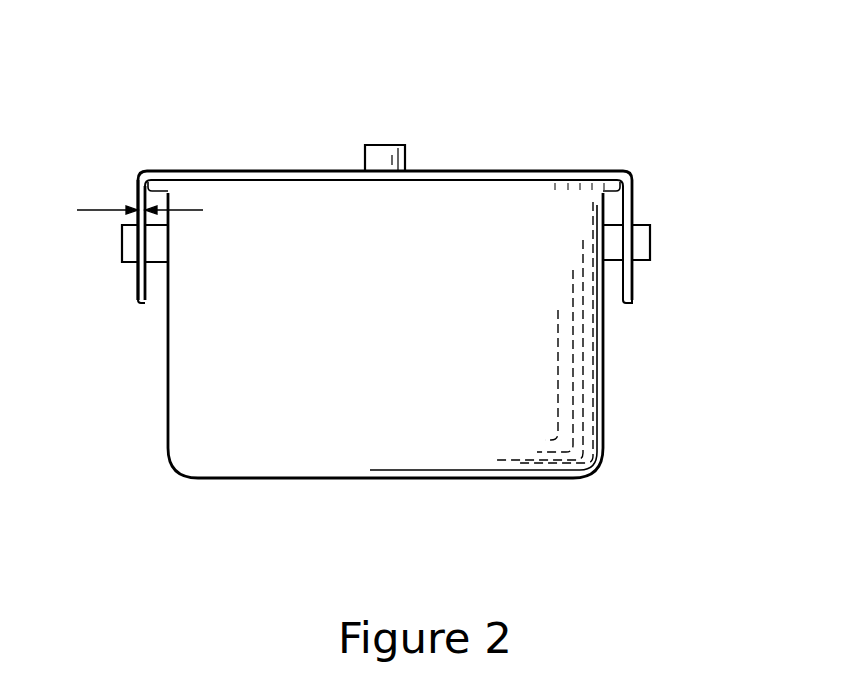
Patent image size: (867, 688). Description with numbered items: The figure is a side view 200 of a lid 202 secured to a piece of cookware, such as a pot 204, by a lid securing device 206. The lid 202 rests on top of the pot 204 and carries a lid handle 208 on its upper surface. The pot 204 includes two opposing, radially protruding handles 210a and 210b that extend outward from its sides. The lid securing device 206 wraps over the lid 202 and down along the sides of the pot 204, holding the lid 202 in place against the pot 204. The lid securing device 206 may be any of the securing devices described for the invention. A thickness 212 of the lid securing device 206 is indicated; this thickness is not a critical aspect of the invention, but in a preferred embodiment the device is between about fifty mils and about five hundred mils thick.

The side view 200 is at (617, 80).
The lid 202 is at (630, 181).
The cookware 204 is at (604, 349).
The lid securing device 206 is at (138, 195).
The lid handle 208 is at (382, 145).
The handle 210a is at (122, 264).
The handle 210b is at (650, 241).
The thickness 212 is at (92, 213).